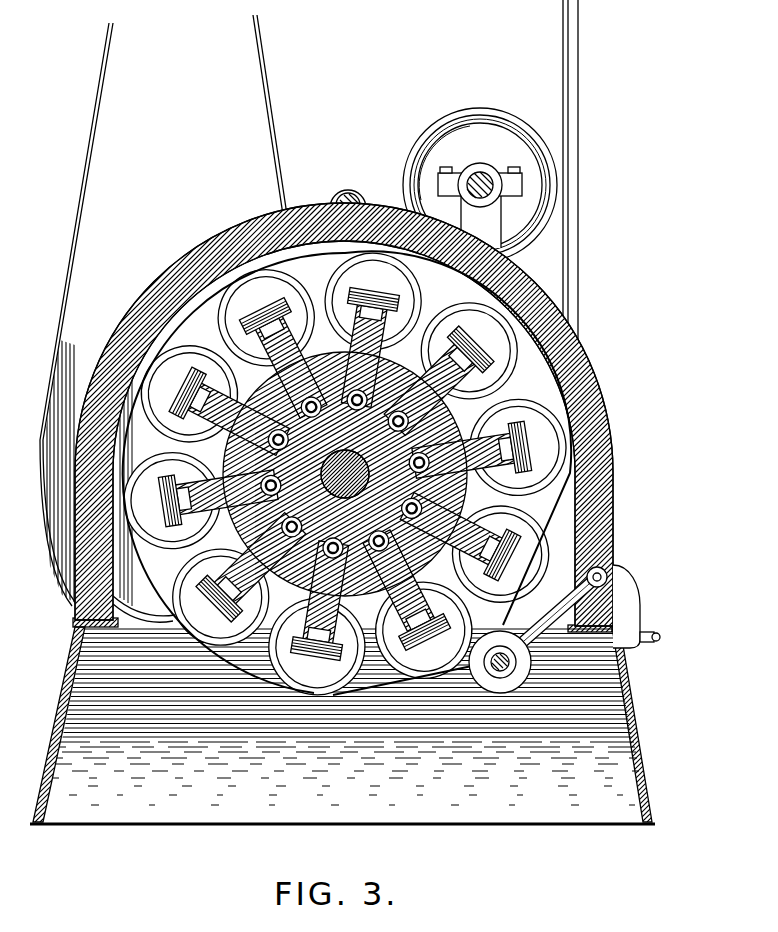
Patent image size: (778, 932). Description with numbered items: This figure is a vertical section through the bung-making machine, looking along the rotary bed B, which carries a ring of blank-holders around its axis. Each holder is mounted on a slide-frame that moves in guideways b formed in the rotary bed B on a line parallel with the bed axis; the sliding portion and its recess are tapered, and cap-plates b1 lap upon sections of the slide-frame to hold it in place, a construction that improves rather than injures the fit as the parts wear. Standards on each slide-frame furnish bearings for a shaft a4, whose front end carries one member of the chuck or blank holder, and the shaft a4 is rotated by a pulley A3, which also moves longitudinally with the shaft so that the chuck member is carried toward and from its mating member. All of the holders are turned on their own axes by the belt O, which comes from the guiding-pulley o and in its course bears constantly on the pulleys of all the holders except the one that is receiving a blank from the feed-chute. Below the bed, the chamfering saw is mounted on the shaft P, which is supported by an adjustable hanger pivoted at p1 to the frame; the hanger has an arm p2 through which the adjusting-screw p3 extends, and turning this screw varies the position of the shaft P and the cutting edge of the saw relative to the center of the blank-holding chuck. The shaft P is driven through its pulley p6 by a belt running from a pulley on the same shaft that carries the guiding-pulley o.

The belt O is at (346, 313).
The guiding-pulley o is at (488, 113).
The pulley A3 is at (373, 301).
The shaft a4 is at (279, 344).
The rotary bed B is at (345, 474).
The guideways b is at (430, 602).
The cap-plates b1 is at (275, 582).
The shaft P is at (616, 561).
The pivot p1 is at (608, 575).
The arm p2 is at (636, 612).
The adjusting-screw p3 is at (660, 638).
The pulley p6 is at (498, 672).